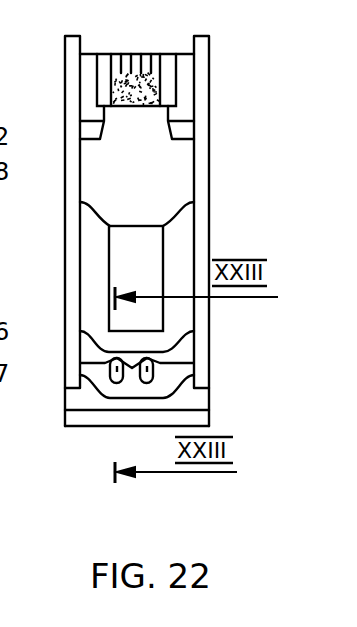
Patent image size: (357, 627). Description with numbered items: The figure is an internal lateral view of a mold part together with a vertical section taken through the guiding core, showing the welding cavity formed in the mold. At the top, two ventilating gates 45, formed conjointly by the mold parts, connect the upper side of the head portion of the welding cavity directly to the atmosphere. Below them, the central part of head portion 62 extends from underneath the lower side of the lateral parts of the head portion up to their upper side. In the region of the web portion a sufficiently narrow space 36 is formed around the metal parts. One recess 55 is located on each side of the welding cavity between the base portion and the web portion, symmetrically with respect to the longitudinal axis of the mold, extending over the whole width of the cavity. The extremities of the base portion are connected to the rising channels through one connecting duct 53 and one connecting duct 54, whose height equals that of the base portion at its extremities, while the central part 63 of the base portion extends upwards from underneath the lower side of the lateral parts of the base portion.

The ventilating gate 45 is at (185, 97).
The central part of head portion 62 is at (160, 218).
The space 36 is at (155, 268).
The recess 55 is at (152, 341).
The connecting duct 54 is at (157, 370).
The connecting duct 53 is at (82, 375).
The central part of base portion 63 is at (117, 388).